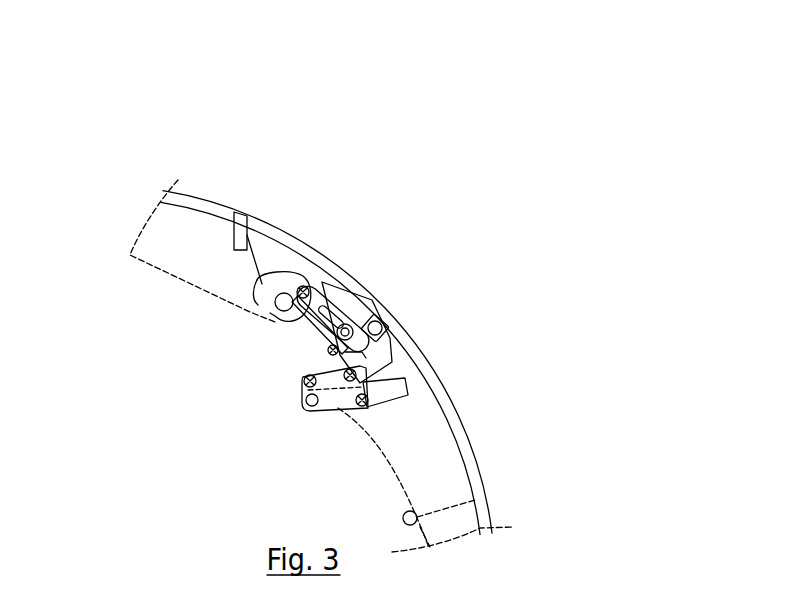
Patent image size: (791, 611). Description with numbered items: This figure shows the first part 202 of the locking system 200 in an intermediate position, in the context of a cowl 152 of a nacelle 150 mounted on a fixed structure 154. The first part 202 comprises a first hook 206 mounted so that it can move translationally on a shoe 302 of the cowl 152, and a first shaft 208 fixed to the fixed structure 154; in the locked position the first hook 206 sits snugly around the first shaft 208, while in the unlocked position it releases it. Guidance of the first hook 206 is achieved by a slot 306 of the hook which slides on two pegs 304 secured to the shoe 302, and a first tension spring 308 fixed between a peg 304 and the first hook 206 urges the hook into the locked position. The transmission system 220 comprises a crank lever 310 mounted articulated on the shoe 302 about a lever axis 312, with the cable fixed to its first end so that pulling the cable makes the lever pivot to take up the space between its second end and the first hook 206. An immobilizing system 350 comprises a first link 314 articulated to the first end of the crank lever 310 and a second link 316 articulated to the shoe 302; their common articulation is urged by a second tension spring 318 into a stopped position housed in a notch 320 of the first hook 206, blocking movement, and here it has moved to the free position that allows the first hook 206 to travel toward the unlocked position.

The nacelle 150 is at (286, 100).
The cowl 152 is at (485, 490).
The fixed structure 154 is at (210, 252).
The locking system 200 is at (619, 166).
The first part 202 is at (223, 104).
The first hook 206 is at (262, 284).
The first shaft 208 is at (276, 312).
The transmission system 220 is at (145, 400).
The shoe 302 is at (355, 310).
The pegs 304 is at (322, 312).
The slot 306 is at (348, 330).
The first tension spring 308 is at (300, 286).
The crank lever 310 is at (350, 403).
The lever axis 312 is at (370, 407).
The first link 314 is at (306, 374).
The second link 316 is at (350, 353).
The second tension spring 318 is at (367, 330).
The notch 320 is at (365, 355).
The immobilizing system 350 is at (128, 323).